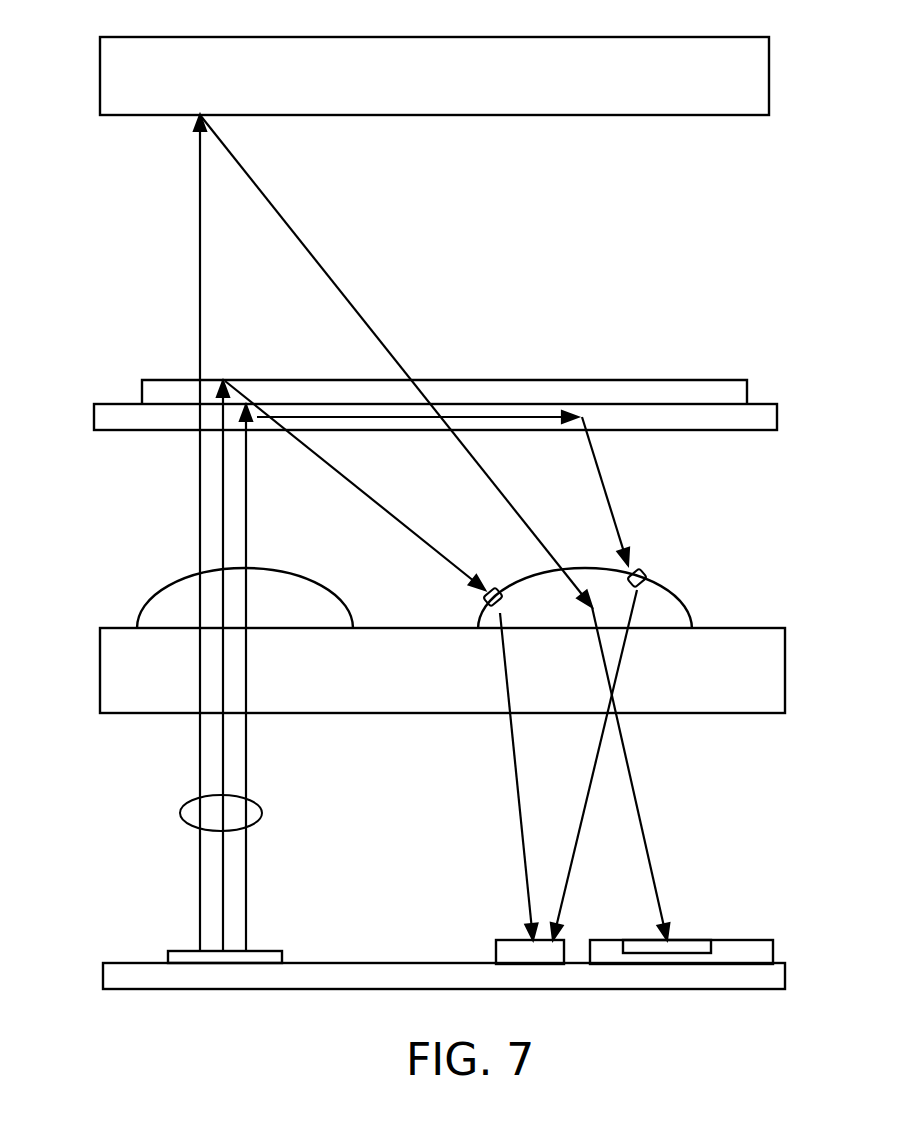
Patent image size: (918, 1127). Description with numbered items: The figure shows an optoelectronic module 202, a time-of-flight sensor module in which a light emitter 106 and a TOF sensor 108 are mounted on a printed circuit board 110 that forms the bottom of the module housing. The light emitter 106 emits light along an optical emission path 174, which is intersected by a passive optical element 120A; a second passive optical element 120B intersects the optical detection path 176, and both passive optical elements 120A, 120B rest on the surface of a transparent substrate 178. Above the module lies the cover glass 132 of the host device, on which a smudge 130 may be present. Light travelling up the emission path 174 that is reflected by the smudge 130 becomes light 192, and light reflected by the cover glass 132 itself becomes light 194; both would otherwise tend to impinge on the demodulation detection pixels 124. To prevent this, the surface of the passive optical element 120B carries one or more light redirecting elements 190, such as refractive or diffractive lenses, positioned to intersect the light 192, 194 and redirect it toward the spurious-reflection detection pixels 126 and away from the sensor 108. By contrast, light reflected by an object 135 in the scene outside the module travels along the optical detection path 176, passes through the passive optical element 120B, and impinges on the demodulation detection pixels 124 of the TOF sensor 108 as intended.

The object 135 is at (99, 75).
The optoelectronic module 202 is at (682, 258).
The smudge 130 is at (142, 390).
The cover glass 132 is at (94, 420).
The transparent substrate 178 is at (99, 653).
The passive optical element 120A is at (150, 597).
The passive optical element 120B is at (658, 608).
The light redirecting elements 190 is at (497, 590).
The light 192 is at (373, 502).
The light 194 is at (603, 493).
The optical detection path 176 is at (640, 810).
The optical emission path 174 is at (263, 813).
The light emitter 106 is at (167, 958).
The printed circuit board 110 is at (127, 982).
The spurious-reflection detection pixels 126 is at (513, 940).
The demodulation detection pixels 124 is at (697, 945).
The TOF sensor 108 is at (745, 945).